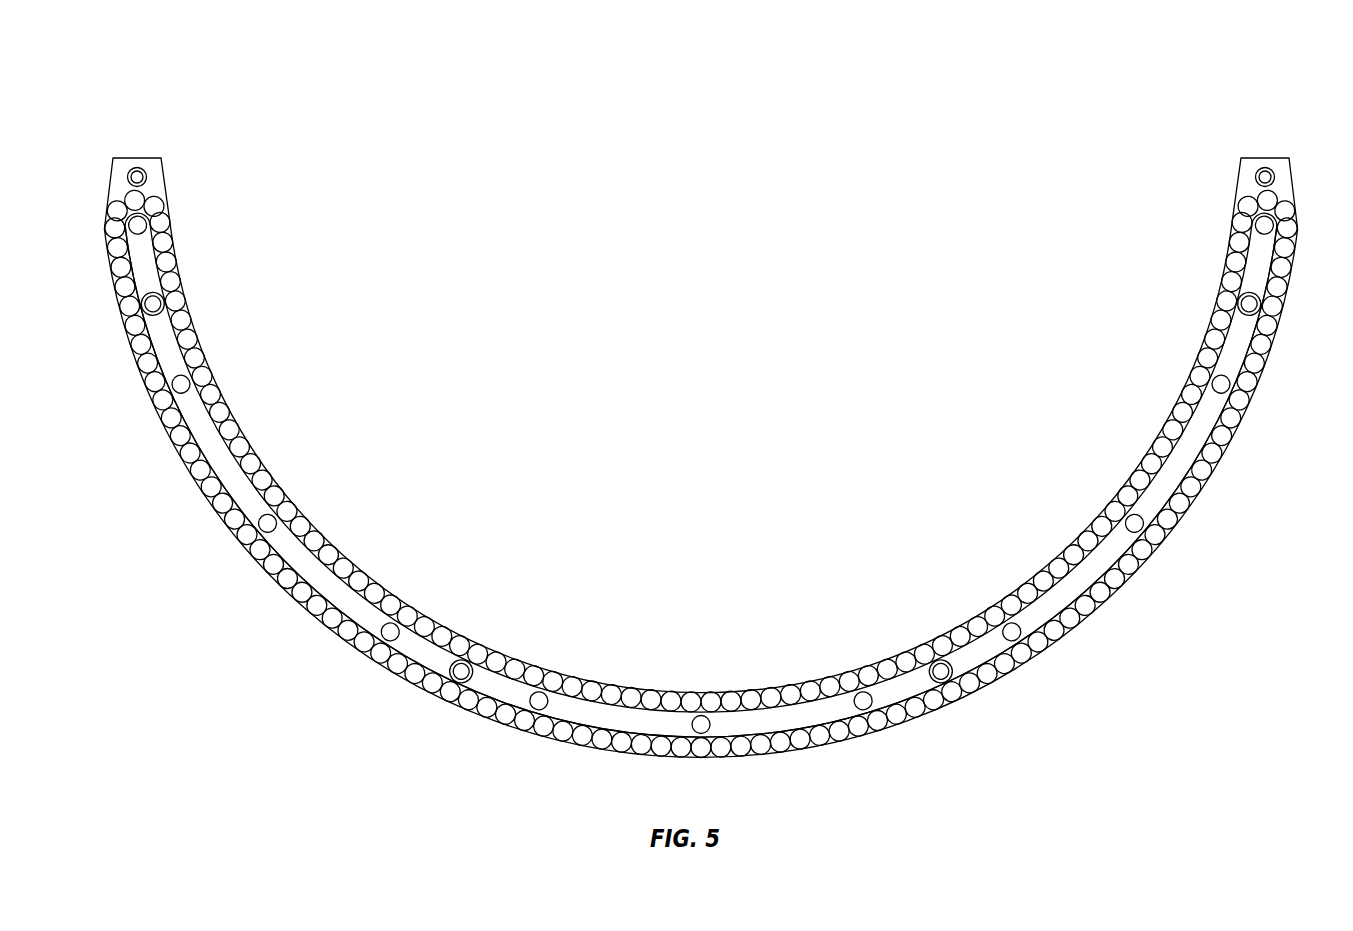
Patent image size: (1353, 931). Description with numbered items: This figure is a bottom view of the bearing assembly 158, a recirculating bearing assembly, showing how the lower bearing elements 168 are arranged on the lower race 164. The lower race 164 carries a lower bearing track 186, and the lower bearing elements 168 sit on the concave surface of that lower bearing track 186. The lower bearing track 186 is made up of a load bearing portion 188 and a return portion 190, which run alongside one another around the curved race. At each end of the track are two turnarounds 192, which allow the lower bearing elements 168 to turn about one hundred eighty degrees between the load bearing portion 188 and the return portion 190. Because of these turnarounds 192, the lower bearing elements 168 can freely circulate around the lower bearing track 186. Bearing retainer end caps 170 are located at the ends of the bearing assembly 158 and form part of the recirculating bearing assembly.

The bearing assembly 158 is at (750, 218).
The lower race 164 is at (278, 546).
The lower bearing elements 168 is at (1176, 428).
The bearing retainer end caps 170 is at (138, 158).
The lower bearing track 186 is at (374, 663).
The load bearing portion 188 is at (1000, 680).
The return portion 190 is at (353, 560).
The turnarounds 192 is at (150, 200).